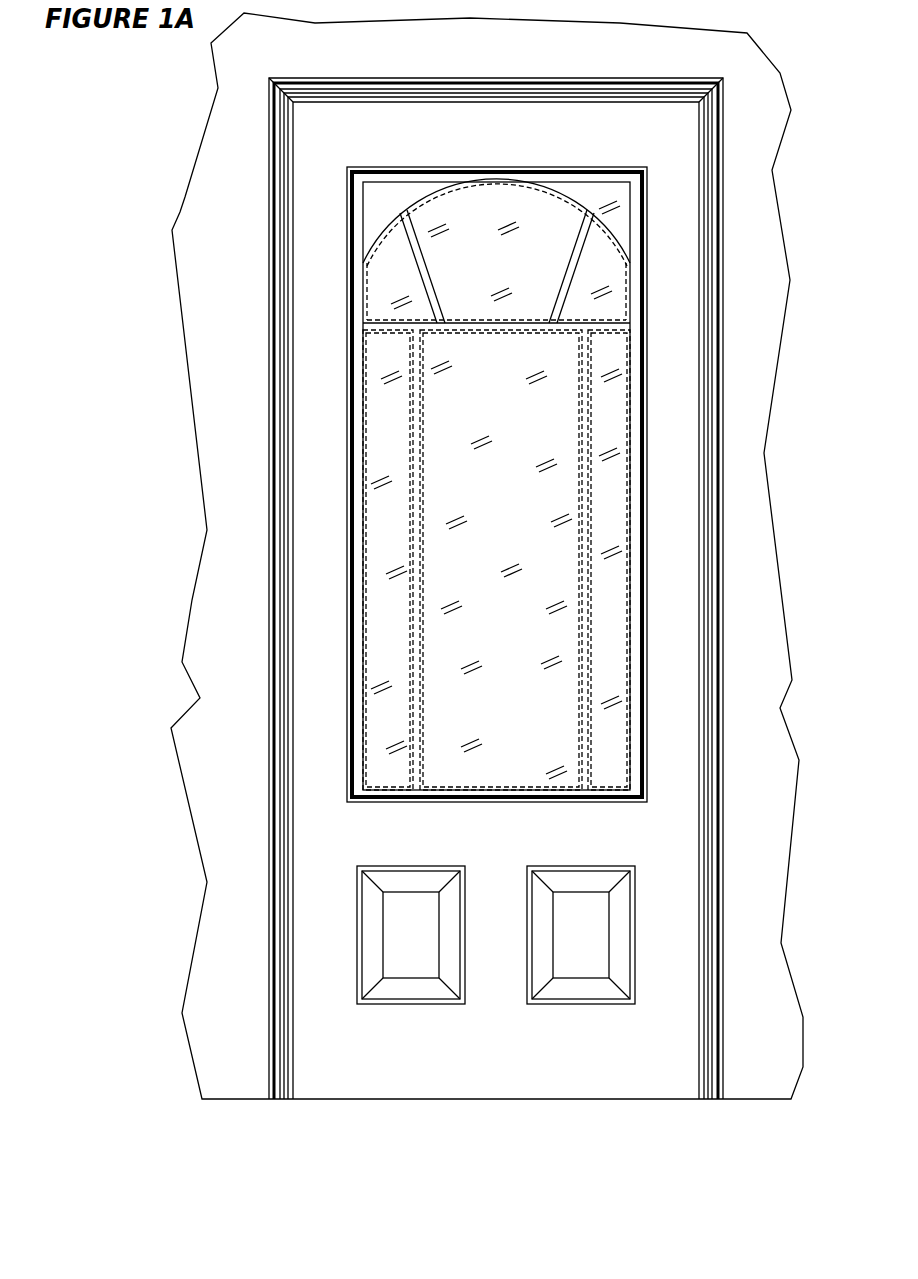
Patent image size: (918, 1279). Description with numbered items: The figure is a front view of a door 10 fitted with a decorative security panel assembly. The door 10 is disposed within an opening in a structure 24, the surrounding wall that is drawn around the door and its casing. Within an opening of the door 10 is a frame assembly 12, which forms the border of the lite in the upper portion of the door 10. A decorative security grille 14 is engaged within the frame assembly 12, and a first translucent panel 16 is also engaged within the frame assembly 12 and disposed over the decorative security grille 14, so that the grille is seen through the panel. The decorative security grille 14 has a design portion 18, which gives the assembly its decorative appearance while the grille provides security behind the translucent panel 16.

The door 10 is at (675, 143).
The frame assembly 12 is at (642, 218).
The decorative security grille 14 is at (398, 213).
The first translucent panel 16 is at (593, 190).
The design portion 18 is at (417, 425).
The structure 24 is at (763, 78).